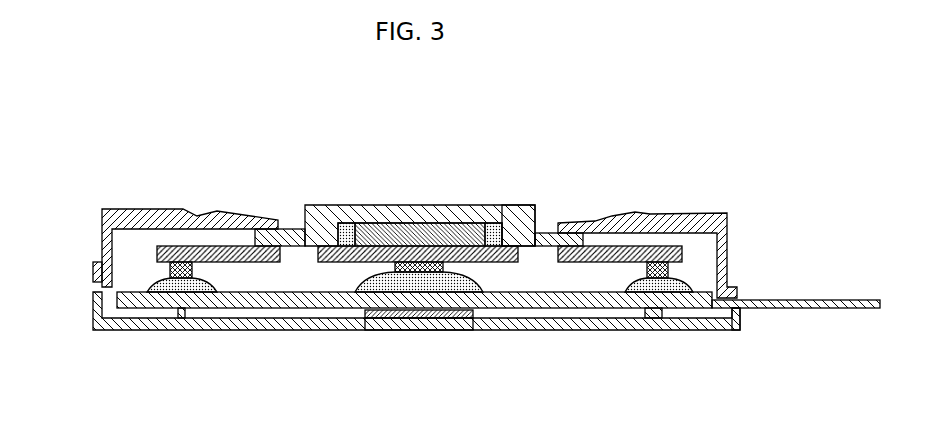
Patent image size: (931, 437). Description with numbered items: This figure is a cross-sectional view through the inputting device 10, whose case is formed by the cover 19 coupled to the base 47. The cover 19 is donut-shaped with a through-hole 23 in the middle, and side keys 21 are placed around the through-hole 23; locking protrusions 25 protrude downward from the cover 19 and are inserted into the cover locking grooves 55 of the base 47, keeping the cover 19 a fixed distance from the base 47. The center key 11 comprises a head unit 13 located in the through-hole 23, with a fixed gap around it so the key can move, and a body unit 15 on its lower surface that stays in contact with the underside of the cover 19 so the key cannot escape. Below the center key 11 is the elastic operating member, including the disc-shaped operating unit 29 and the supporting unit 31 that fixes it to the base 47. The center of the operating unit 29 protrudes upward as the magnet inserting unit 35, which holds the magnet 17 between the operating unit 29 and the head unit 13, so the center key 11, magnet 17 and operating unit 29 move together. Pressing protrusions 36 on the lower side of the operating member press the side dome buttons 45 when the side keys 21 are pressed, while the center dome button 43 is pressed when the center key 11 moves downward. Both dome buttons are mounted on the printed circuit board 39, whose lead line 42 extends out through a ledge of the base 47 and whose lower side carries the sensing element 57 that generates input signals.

The inputting device 10 is at (757, 160).
The center key 11 is at (455, 210).
The head unit 13 is at (497, 212).
The body unit 15 is at (291, 228).
The magnet 17 is at (420, 240).
The cover 19 is at (134, 208).
The side keys 21 is at (201, 212).
The through-hole 23 is at (547, 230).
The locking protrusions 25 is at (93, 278).
The operating unit 29 is at (317, 263).
The supporting unit 31 is at (615, 250).
The magnet inserting unit 35 is at (346, 228).
The pressing protrusions 36 is at (170, 268).
The printed circuit board 39 is at (580, 309).
The lead line 42 is at (823, 300).
The center dome button 43 is at (350, 291).
The side dome buttons 45 is at (162, 292).
The base 47 is at (740, 319).
The cover locking grooves 55 is at (93, 296).
The sensing element 57 is at (410, 322).